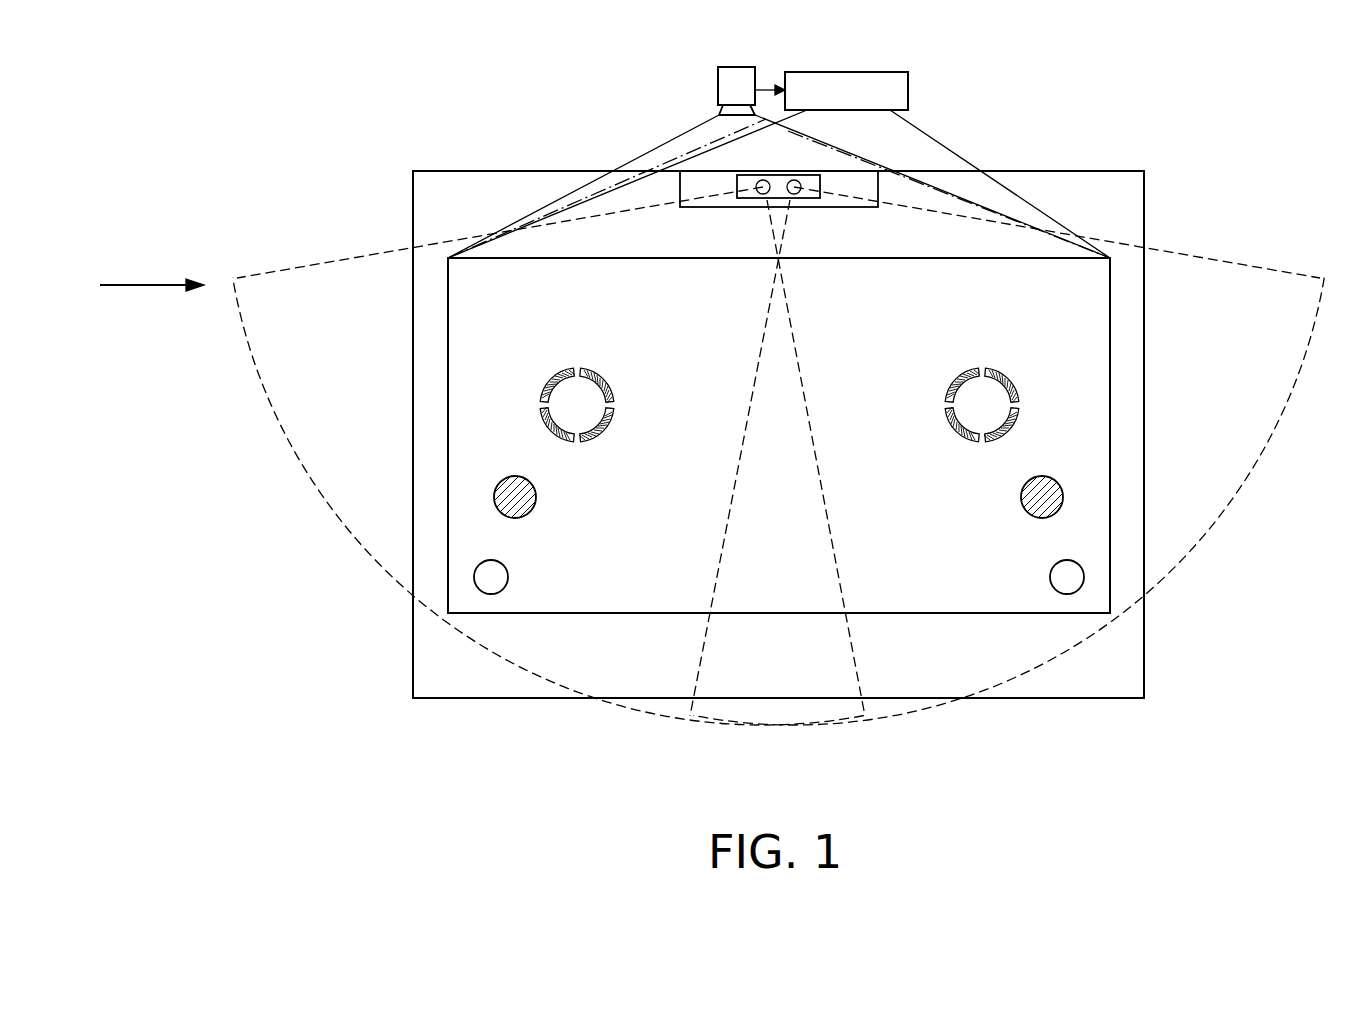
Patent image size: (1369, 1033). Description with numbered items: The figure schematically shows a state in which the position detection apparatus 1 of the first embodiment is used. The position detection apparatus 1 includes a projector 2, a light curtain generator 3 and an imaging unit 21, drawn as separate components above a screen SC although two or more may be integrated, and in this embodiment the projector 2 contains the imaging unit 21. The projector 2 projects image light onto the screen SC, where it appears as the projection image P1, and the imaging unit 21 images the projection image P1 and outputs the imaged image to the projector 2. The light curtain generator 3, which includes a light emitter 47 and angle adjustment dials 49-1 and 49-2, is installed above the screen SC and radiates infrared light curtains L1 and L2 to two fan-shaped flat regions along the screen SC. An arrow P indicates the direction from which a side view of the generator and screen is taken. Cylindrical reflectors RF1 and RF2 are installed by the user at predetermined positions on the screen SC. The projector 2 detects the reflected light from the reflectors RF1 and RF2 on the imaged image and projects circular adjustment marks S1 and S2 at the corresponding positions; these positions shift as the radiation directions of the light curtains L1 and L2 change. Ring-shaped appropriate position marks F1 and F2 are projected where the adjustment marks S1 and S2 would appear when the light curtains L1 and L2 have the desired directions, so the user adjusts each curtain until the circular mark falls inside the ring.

The position detection apparatus 1 is at (476, 113).
The projector 2 is at (908, 90).
The imaging unit 21 is at (718, 85).
The light curtain generator 3 is at (727, 207).
The light emitter 47 is at (815, 200).
The angle adjustment dial 49-1 is at (763, 195).
The angle adjustment dial 49-2 is at (794, 195).
The screen SC is at (1060, 171).
The projection image P1 is at (1110, 385).
The arrow P is at (148, 283).
The light curtain L1 is at (298, 263).
The light curtain L2 is at (1265, 263).
The appropriate position mark F1 is at (607, 382).
The appropriate position mark F2 is at (951, 382).
The adjustment mark S1 is at (537, 497).
The adjustment mark S2 is at (1020, 497).
The reflector RF1 is at (509, 577).
The reflector RF2 is at (1050, 577).